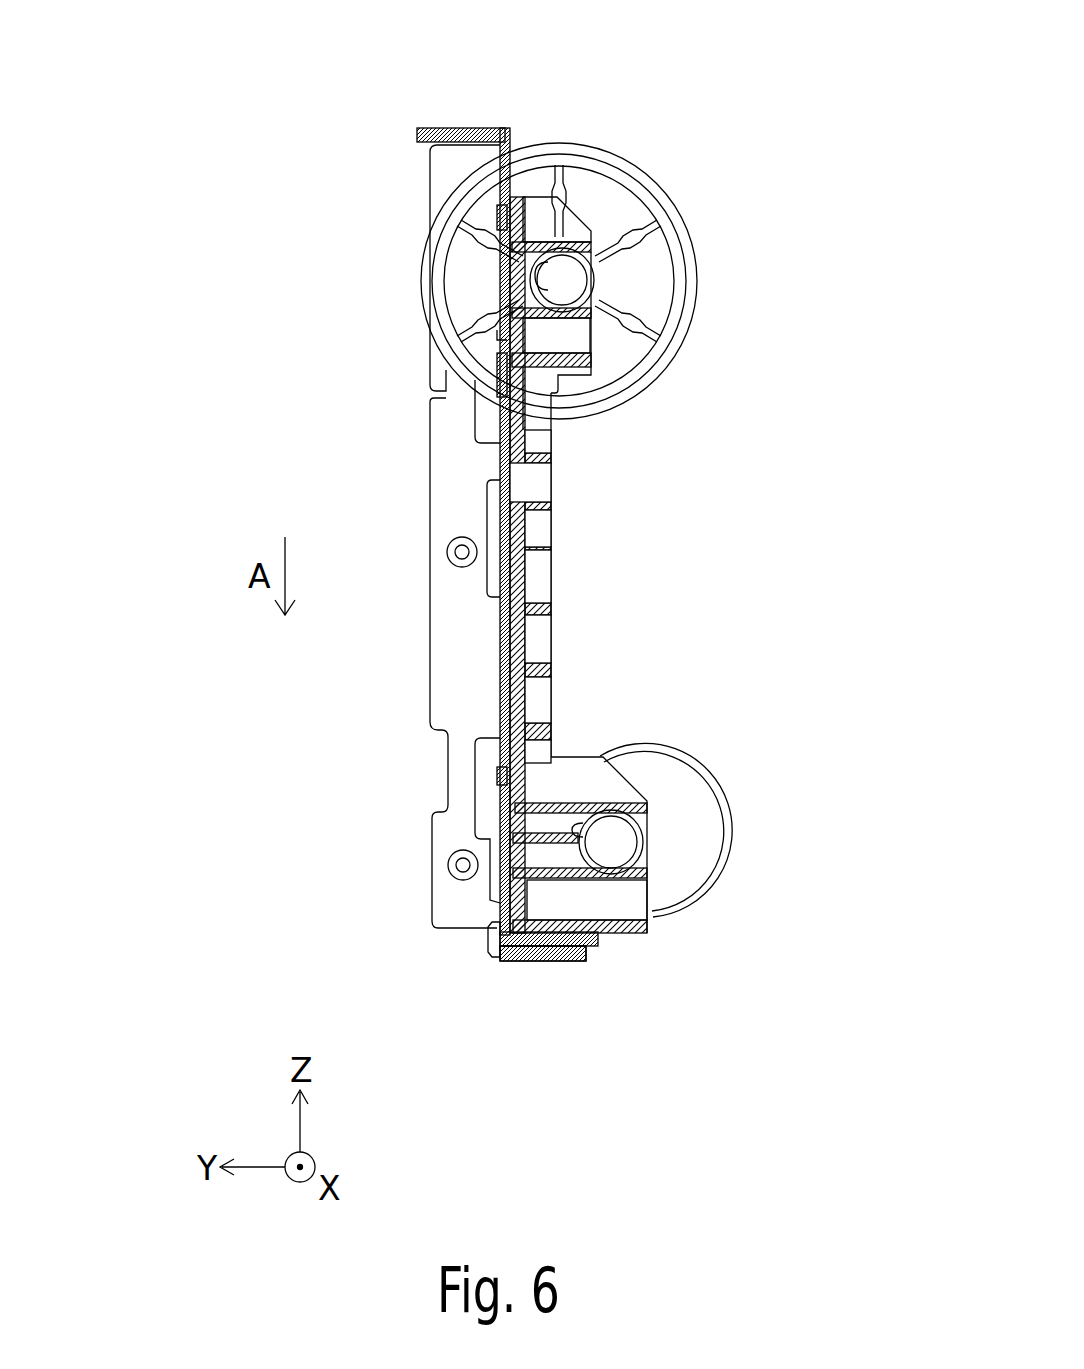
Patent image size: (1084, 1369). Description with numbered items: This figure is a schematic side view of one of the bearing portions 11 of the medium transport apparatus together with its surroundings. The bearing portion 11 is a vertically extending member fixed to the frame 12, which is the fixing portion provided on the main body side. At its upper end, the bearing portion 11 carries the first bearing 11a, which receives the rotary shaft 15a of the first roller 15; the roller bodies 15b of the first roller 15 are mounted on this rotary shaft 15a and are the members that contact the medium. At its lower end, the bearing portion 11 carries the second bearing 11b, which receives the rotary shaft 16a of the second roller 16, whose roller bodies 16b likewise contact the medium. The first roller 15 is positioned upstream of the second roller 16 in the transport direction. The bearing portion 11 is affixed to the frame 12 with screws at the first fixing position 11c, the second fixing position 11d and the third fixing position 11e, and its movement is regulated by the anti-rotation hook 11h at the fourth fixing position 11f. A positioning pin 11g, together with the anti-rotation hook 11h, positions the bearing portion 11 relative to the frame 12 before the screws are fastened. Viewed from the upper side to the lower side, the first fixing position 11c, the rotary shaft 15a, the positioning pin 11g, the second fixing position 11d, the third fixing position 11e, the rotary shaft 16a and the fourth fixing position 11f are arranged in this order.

The bearing portion 11 is at (553, 527).
The first bearing 11a is at (540, 215).
The second bearing 11b is at (547, 962).
The first fixing position 11c is at (497, 214).
The second fixing position 11d is at (497, 388).
The third fixing position 11e is at (498, 782).
The fourth fixing position 11f is at (486, 939).
The positioning pin 11g is at (492, 336).
The anti-rotation hook 11h is at (543, 953).
The frame 12 is at (462, 127).
The first roller 15 is at (609, 212).
The rotary shaft 15a is at (562, 282).
The roller body 15b is at (693, 233).
The second roller 16 is at (653, 945).
The rotary shaft 16a is at (608, 848).
The roller body 16b is at (703, 857).